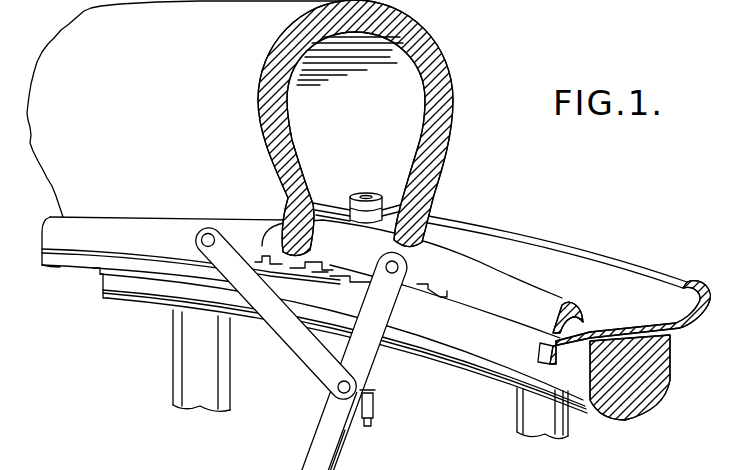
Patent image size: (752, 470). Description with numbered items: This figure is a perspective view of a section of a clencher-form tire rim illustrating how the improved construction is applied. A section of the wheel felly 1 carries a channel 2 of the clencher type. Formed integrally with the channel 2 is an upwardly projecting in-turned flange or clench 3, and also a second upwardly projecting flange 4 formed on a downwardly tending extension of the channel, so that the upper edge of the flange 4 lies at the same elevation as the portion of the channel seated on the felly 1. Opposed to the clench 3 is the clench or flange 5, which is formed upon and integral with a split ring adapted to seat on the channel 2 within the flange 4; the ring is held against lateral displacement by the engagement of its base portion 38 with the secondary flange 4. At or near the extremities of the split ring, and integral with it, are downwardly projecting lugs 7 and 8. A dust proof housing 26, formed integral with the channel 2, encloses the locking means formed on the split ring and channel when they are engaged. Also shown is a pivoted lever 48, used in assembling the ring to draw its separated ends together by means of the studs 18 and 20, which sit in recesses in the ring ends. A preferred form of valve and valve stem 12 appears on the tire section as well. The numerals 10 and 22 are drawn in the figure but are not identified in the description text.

The wheel felly 1 is at (653, 368).
The channel 2 is at (376, 288).
The in-turned flange or clench 3 is at (657, 276).
The second upwardly projecting flange 4 is at (540, 345).
The clench or flange 5 is at (97, 228).
The downwardly projecting lug 7 is at (266, 273).
The downwardly projecting lug 8 is at (338, 275).
The guide slot 10 is at (320, 273).
The valve and valve stem 12 is at (373, 385).
The stud 18 is at (208, 232).
The stud 20 is at (400, 267).
The locking tooth 22 is at (441, 290).
The dust proof housing 26 is at (232, 290).
The base portion 38 is at (586, 317).
The pivoted lever 48 is at (325, 450).